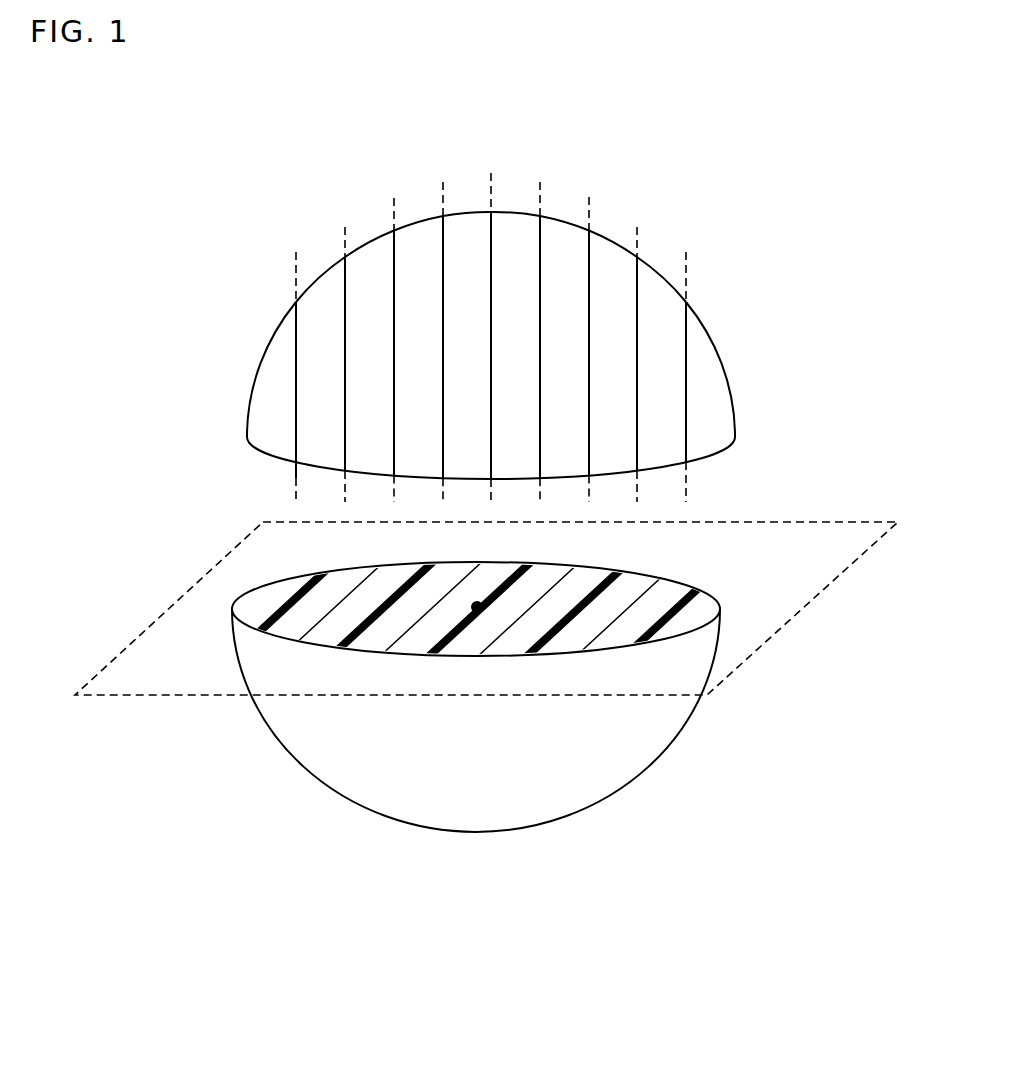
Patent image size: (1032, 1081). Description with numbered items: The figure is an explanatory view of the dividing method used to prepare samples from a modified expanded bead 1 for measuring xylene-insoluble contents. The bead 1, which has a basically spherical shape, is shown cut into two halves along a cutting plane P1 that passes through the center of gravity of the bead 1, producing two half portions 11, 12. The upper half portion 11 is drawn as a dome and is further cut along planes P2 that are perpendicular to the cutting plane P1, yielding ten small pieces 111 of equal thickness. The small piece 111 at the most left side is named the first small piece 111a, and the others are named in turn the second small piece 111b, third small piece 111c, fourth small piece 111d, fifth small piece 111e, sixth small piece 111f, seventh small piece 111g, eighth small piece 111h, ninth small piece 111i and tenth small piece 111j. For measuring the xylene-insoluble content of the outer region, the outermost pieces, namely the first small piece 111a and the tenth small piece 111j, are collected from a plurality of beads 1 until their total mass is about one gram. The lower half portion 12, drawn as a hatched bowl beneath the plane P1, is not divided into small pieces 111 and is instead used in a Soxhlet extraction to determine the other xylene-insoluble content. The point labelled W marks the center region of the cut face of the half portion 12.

The modified expanded bead 1 is at (780, 165).
The half portion 11 is at (278, 327).
The small pieces 111 is at (469, 296).
The first small piece 111a is at (277, 407).
The second small piece 111b is at (330, 287).
The third small piece 111c is at (372, 275).
The fourth small piece 111d is at (418, 347).
The fifth small piece 111e is at (472, 232).
The sixth small piece 111f is at (518, 232).
The seventh small piece 111g is at (564, 346).
The eighth small piece 111h is at (613, 351).
The ninth small piece 111i is at (660, 300).
The tenth small piece 111j is at (707, 382).
The half portion 12 is at (370, 750).
The workpiece point W is at (477, 607).
The cutting plane P1 is at (770, 578).
The planes P2 is at (295, 272).